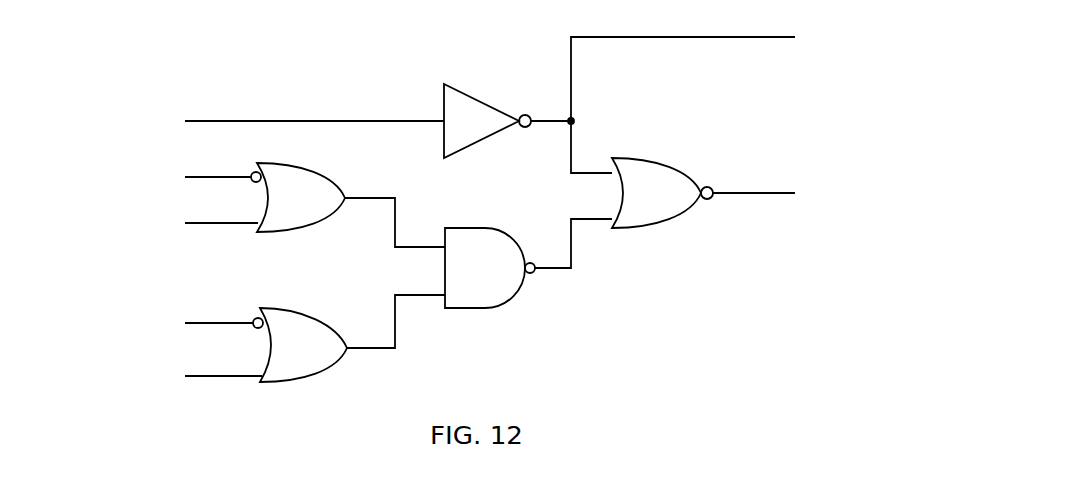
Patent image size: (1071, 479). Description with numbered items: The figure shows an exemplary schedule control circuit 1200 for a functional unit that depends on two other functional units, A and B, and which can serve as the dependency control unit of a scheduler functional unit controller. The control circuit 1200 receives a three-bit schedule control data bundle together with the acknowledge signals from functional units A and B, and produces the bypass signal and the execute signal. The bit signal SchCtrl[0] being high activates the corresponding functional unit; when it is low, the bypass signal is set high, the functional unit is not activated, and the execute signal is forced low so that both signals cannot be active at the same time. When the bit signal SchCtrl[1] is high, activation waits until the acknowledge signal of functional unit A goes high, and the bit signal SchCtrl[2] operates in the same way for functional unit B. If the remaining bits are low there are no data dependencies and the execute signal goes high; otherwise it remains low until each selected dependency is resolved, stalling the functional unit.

The control circuit 1200 is at (482, 209).
The bit signal SchCtrl[0] 0 is at (245, 119).
The bit signal SchCtrl[1] 1 is at (154, 178).
The bit signal SchCtrl[2] 2 is at (155, 328).